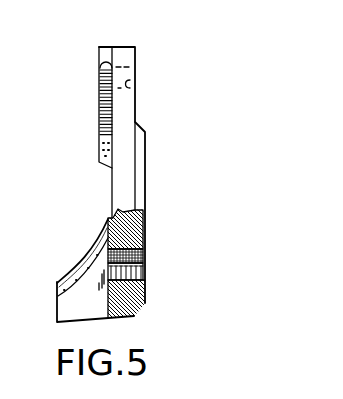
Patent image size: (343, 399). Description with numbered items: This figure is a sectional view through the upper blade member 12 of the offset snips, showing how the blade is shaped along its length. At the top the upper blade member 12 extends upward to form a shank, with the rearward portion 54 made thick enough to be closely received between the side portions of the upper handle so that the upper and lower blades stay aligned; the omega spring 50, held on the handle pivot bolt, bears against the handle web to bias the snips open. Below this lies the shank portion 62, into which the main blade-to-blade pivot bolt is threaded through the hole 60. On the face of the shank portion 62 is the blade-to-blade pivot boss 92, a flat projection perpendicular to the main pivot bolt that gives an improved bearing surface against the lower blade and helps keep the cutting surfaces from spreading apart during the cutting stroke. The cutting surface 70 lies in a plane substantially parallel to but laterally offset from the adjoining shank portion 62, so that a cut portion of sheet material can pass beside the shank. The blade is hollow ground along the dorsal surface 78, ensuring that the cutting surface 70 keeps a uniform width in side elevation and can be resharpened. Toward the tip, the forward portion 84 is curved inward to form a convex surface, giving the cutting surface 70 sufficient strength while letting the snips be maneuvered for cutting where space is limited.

The upper blade member 12 is at (91, 186).
The omega spring 50 is at (134, 83).
The rearward portion 54 is at (102, 47).
The hole 60 is at (146, 263).
The shank portion 62 is at (146, 233).
The cutting surface 70 is at (57, 321).
The dorsal surface 78 is at (70, 271).
The forward portion 84 is at (88, 321).
The blade-to-blade pivot boss 92 is at (101, 240).